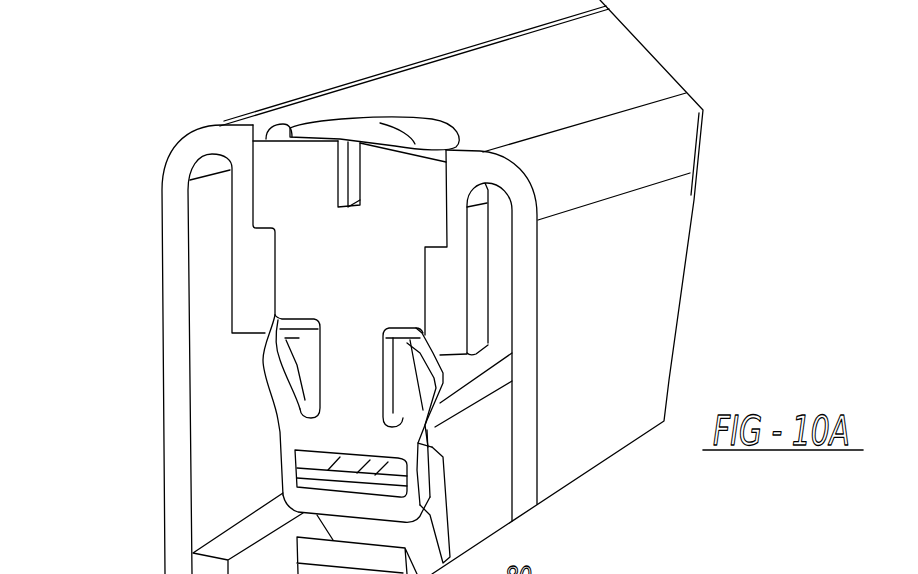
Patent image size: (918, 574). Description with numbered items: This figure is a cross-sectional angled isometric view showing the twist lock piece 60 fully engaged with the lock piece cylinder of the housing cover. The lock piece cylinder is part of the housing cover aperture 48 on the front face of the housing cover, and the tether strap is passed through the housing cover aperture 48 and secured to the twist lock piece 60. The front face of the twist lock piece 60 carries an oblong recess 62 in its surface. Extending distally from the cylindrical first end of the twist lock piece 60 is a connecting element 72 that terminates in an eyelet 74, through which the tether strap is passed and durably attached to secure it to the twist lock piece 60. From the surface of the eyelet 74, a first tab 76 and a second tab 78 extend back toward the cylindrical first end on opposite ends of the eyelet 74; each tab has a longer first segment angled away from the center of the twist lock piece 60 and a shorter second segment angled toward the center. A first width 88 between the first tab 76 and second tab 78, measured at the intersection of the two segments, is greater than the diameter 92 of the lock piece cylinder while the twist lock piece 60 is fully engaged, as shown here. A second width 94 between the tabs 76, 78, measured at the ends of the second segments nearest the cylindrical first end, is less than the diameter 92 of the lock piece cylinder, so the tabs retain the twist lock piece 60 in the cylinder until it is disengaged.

The housing cover aperture 48 is at (265, 132).
The oblong recess in the front face 62 is at (347, 148).
The twist lock piece 60 is at (398, 177).
The diameter of the lock piece cylinder 92 is at (424, 275).
The second width 94 is at (404, 342).
The first width 88 is at (415, 388).
The first tab 76 is at (270, 395).
The connecting element 72 is at (351, 412).
The eyelet 74 is at (323, 460).
The second tab 78 is at (438, 411).